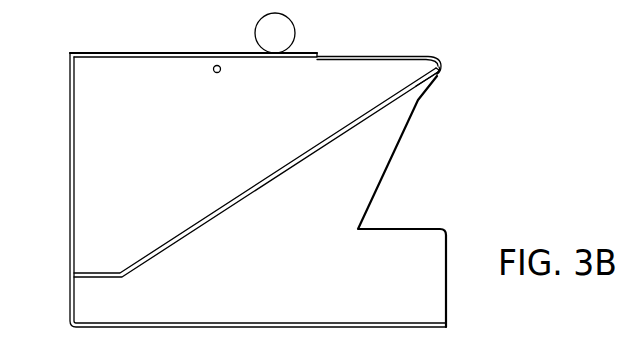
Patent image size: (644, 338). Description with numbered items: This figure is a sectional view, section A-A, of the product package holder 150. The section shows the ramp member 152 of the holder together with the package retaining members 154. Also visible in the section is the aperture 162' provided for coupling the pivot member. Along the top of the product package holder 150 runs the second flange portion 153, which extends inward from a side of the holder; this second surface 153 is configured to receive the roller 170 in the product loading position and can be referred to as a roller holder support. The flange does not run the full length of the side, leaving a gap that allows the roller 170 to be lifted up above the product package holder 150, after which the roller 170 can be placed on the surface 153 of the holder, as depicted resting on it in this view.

The product package holder 150 is at (71, 134).
The ramp member 152 is at (227, 208).
The second flange portion 153 is at (219, 54).
The package retaining member 154 is at (441, 74).
The aperture 162' is at (231, 94).
The roller 170 is at (291, 33).